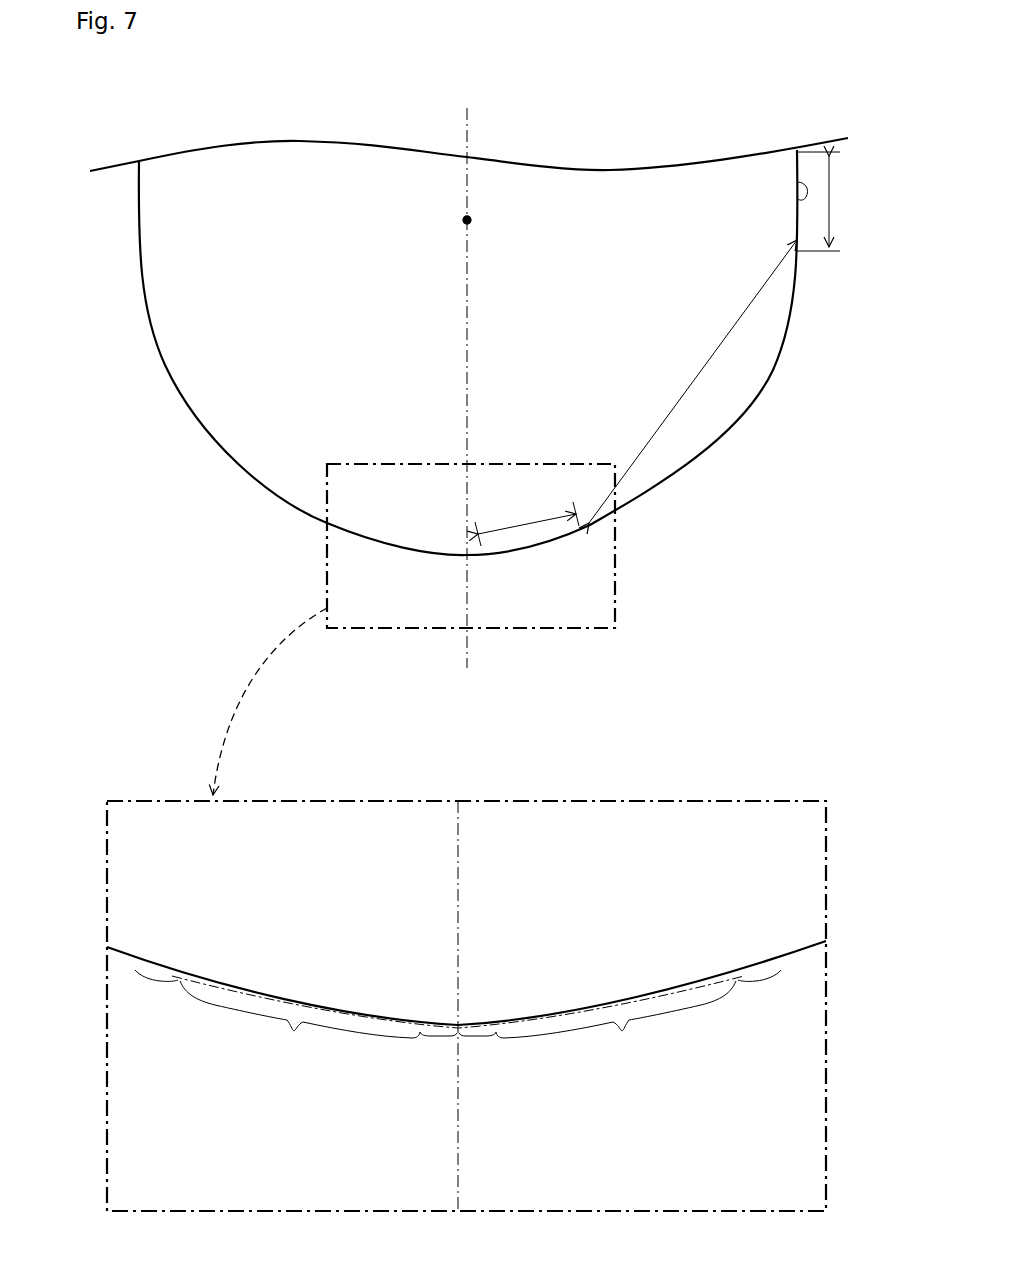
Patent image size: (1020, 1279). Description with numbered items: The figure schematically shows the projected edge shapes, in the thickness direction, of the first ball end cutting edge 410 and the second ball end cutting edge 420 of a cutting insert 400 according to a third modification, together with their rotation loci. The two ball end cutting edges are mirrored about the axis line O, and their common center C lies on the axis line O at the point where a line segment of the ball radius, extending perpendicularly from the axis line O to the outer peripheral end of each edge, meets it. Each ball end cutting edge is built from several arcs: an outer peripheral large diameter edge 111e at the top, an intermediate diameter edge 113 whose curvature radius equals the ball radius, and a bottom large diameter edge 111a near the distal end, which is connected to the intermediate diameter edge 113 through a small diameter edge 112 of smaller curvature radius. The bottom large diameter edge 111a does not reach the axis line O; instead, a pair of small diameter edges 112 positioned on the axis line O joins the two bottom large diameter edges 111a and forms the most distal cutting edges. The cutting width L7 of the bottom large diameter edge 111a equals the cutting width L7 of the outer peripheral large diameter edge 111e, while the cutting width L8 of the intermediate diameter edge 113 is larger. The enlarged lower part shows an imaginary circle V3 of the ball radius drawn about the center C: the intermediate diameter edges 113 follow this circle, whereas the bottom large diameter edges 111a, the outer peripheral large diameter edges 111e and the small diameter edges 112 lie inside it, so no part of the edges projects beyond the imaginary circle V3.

The cutting insert 400 is at (705, 100).
The first ball end cutting edge 410 is at (765, 542).
The second ball end cutting edge 420 is at (186, 538).
The bottom large diameter edge 111a is at (410, 545).
The outer peripheral large diameter edge 111e is at (139, 203).
The small diameter edge 112 is at (348, 531).
The intermediate diameter edge 113 is at (190, 410).
The cutting width L7 is at (835, 200).
The cutting width L8 is at (690, 388).
The imaginary circle V3 is at (620, 1002).
The center C is at (464, 218).
The axis line O is at (470, 112).